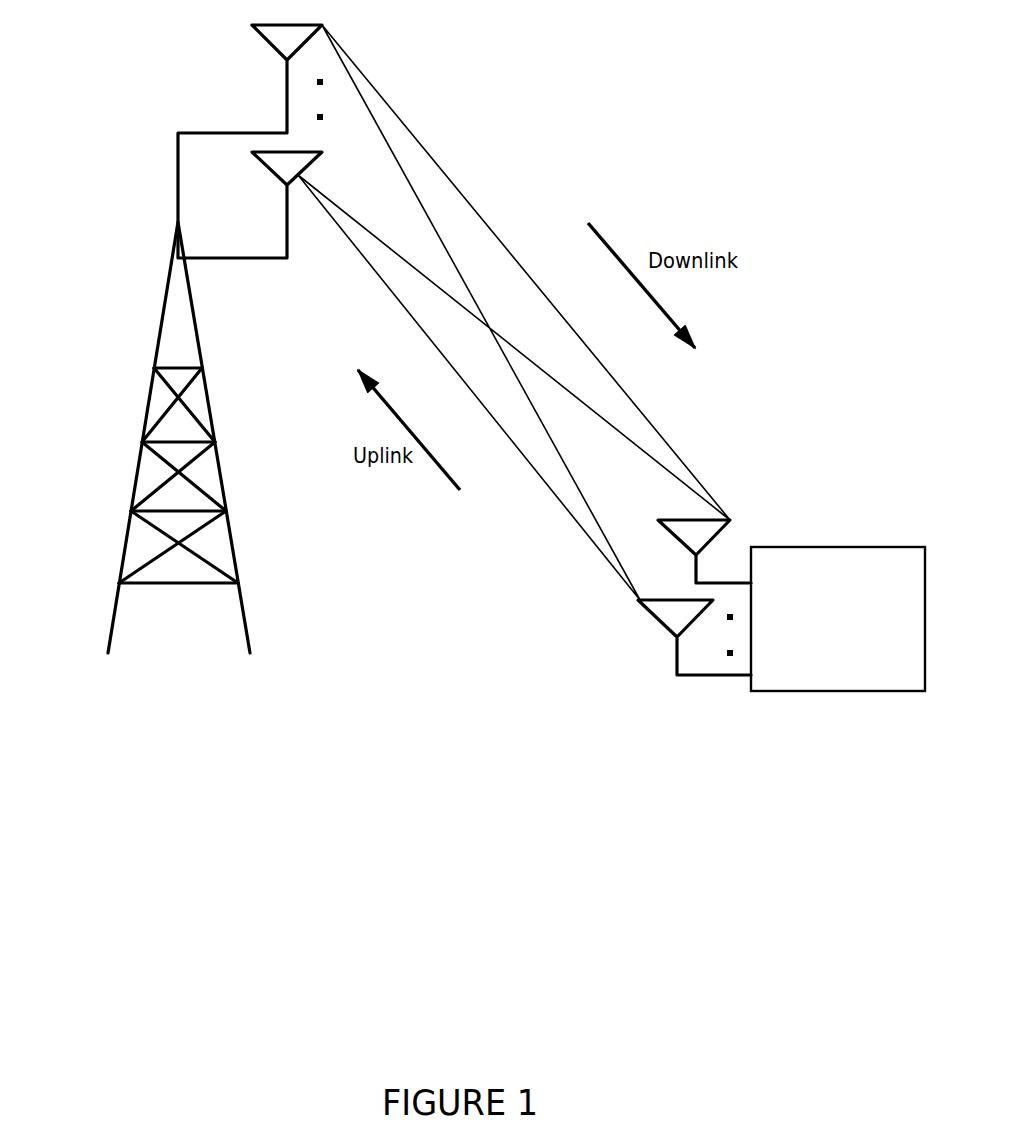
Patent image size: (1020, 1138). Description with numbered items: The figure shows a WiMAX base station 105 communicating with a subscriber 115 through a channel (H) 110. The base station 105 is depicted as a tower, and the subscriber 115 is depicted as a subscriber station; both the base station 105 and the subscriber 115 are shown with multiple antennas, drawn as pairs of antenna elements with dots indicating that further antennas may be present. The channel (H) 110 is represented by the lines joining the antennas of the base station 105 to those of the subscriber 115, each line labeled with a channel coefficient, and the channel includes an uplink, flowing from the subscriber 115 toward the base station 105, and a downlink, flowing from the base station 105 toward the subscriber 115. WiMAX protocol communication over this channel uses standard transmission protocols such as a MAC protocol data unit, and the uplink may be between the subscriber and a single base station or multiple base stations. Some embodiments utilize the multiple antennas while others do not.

The WiMAX base station 105 is at (180, 323).
The channel (H) 110 is at (499, 313).
The subscriber 115 is at (781, 605).